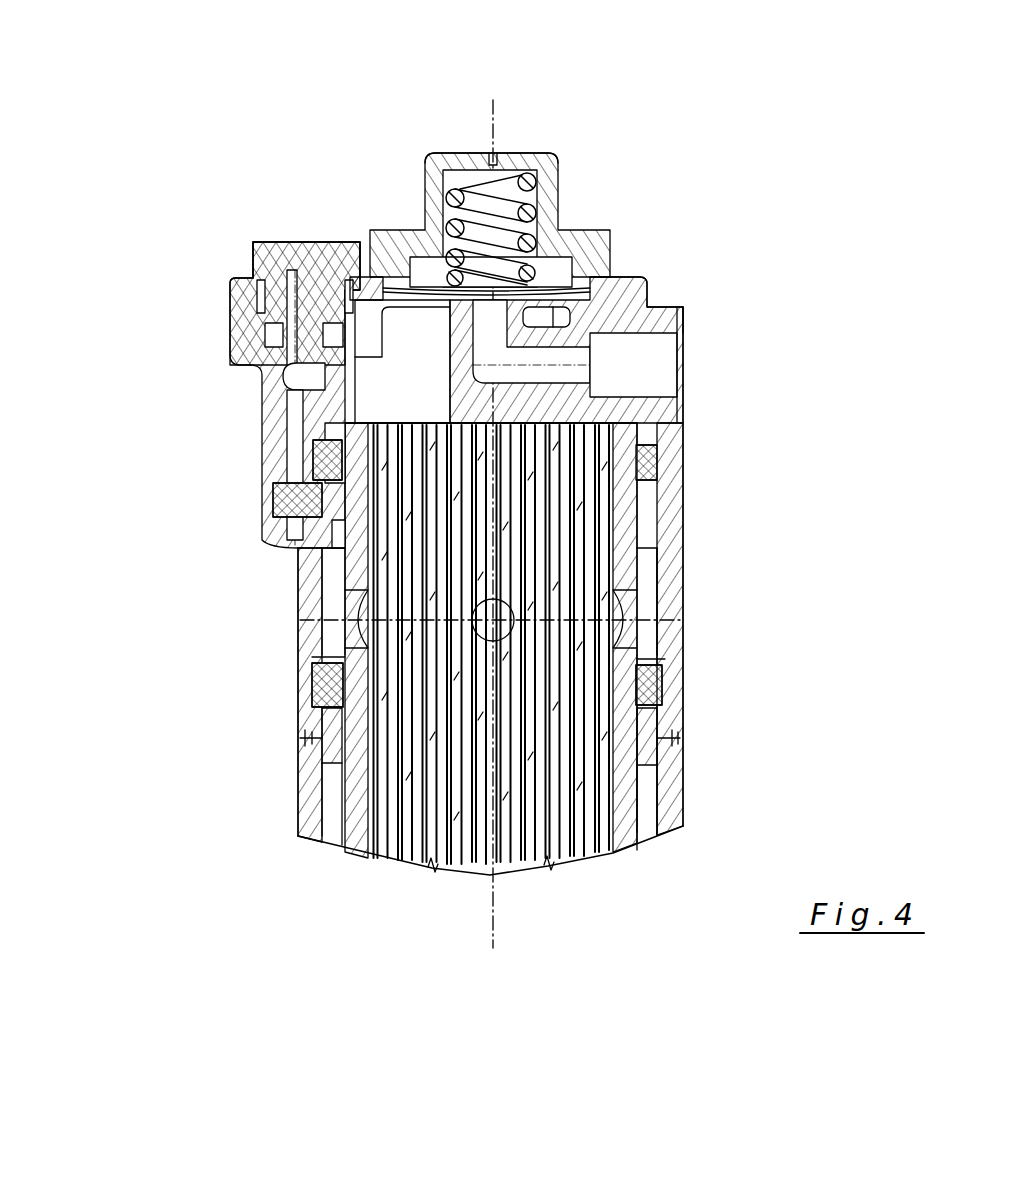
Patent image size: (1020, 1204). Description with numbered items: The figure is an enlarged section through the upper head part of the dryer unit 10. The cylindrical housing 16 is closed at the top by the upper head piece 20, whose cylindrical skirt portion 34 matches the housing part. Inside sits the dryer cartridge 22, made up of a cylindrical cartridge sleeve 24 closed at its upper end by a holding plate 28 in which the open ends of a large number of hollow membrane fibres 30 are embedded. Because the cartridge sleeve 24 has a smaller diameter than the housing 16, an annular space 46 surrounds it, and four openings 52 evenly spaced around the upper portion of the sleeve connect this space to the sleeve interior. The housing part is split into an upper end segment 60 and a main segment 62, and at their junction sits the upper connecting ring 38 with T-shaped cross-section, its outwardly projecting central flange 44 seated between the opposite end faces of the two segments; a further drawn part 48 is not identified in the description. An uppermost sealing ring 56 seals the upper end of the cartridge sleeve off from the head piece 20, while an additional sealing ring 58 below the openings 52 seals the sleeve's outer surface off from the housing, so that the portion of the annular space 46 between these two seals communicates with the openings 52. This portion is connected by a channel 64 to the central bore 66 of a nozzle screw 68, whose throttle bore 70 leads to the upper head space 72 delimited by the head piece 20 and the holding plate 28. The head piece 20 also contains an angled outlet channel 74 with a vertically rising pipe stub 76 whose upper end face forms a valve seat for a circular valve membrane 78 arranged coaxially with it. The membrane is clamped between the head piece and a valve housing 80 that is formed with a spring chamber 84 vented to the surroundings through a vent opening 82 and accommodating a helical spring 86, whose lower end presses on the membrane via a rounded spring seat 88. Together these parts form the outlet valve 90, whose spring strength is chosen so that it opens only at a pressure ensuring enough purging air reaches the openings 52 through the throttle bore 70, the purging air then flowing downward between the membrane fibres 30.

The dryer unit 10 is at (186, 902).
The cylindrical housing 16 is at (292, 800).
The upper head piece 20 is at (262, 440).
The dryer cartridge 22 is at (455, 862).
The cartridge sleeve 24 is at (615, 834).
The upper holding plate 28 is at (604, 532).
The hollow membrane fibres 30 is at (507, 826).
The skirt portion 34 is at (627, 525).
The upper connecting ring 38 is at (333, 772).
The central flange 44 is at (302, 738).
The annular space 46 is at (643, 835).
The snap ring 48 is at (670, 740).
The upper openings 52 is at (616, 624).
The uppermost sealing ring 56 is at (660, 456).
The additional sealing ring 58 is at (648, 686).
The upper end segment 60 is at (648, 592).
The main segment 62 is at (678, 792).
The channel 64 is at (300, 450).
The central bore 66 is at (308, 370).
The nozzle screw 68 is at (290, 236).
The throttle bore 70 is at (302, 328).
The upper head space 72 is at (418, 403).
The angled outlet channel 74 is at (650, 370).
The pipe stub 76 is at (690, 318).
The valve membrane 78 is at (652, 284).
The valve housing 80 is at (556, 158).
The vent opening 82 is at (493, 156).
The spring chamber 84 is at (535, 215).
The helical spring 86 is at (530, 167).
The spring seat 88 is at (432, 272).
The outlet valve 90 is at (462, 152).